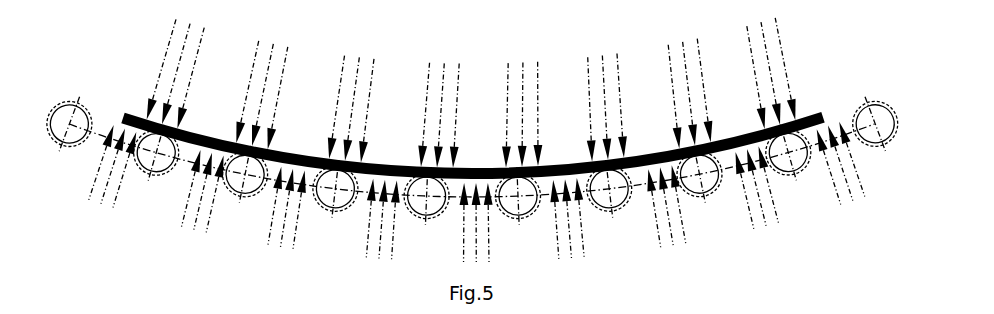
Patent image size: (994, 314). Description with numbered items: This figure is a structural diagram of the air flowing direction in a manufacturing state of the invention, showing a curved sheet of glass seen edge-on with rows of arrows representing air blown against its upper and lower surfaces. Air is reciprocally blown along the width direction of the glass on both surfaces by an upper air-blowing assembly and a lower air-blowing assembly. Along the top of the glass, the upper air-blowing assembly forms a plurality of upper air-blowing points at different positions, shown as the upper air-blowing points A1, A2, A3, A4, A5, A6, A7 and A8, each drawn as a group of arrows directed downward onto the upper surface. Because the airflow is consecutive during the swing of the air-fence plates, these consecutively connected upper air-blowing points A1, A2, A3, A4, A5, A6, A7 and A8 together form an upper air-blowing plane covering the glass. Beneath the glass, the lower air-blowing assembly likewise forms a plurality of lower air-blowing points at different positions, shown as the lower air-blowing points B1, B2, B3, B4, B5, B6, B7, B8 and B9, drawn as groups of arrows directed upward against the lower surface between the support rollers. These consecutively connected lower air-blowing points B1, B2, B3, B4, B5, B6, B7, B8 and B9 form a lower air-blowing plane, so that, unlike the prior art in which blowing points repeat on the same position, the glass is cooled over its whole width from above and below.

The upper air-blowing point A1 is at (165, 73).
The upper air-blowing point A2 is at (250, 94).
The upper air-blowing point A3 is at (340, 108).
The upper air-blowing point A4 is at (423, 114).
The upper air-blowing point A5 is at (509, 114).
The upper air-blowing point A6 is at (597, 108).
The upper air-blowing point A7 is at (682, 93).
The upper air-blowing point A8 is at (767, 73).
The lower air-blowing point B1 is at (101, 166).
The lower air-blowing point B2 is at (189, 191).
The lower air-blowing point B3 is at (272, 207).
The lower air-blowing point B4 is at (366, 218).
The lower air-blowing point B5 is at (463, 222).
The lower air-blowing point B6 is at (556, 222).
The lower air-blowing point B7 is at (657, 208).
The lower air-blowing point B8 is at (747, 191).
The lower air-blowing point B9 is at (841, 168).